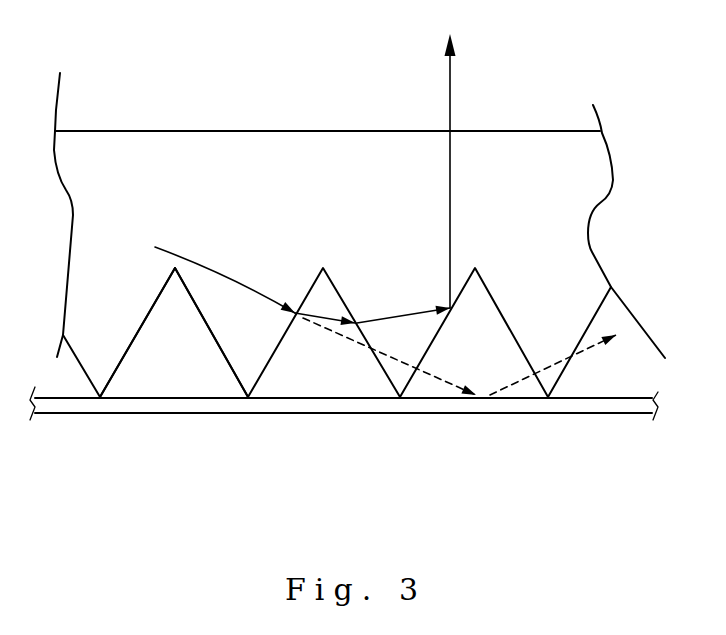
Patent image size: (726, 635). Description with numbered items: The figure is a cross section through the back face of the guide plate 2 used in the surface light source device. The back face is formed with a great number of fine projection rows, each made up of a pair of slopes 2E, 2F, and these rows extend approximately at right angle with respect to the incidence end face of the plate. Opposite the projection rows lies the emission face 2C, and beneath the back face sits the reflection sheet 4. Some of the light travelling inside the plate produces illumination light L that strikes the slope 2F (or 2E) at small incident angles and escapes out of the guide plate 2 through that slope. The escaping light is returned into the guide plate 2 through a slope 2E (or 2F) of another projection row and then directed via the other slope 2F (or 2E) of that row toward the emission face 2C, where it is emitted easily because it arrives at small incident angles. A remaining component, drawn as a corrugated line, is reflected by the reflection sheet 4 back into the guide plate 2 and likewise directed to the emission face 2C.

The guide plate 2 is at (520, 230).
The emission face 2C is at (302, 130).
The slope 2E is at (213, 340).
The slope 2F is at (135, 337).
The reflection sheet 4 is at (423, 408).
The illumination light L is at (450, 115).